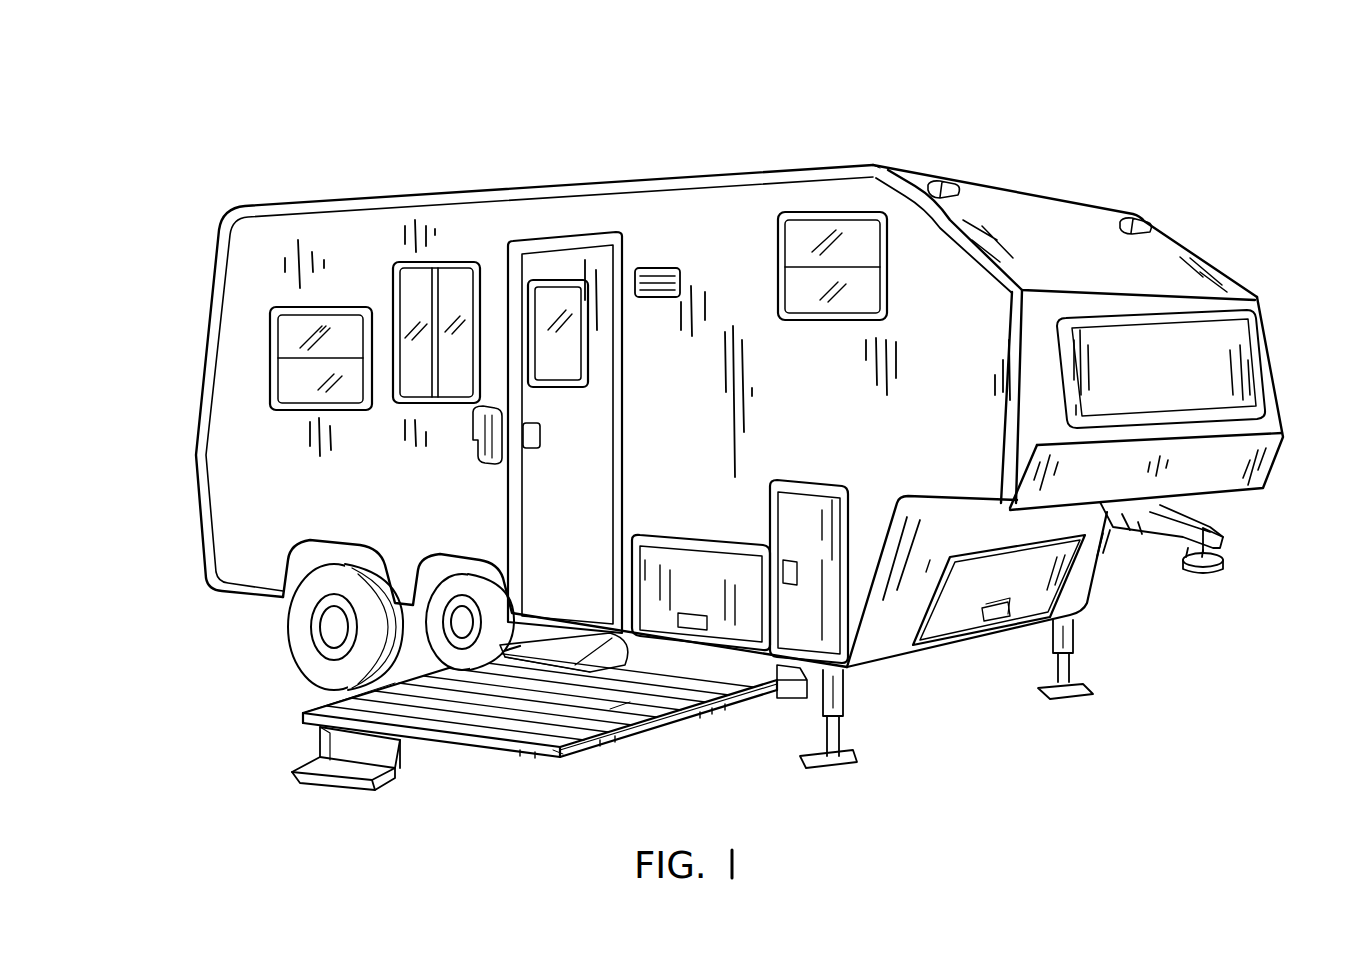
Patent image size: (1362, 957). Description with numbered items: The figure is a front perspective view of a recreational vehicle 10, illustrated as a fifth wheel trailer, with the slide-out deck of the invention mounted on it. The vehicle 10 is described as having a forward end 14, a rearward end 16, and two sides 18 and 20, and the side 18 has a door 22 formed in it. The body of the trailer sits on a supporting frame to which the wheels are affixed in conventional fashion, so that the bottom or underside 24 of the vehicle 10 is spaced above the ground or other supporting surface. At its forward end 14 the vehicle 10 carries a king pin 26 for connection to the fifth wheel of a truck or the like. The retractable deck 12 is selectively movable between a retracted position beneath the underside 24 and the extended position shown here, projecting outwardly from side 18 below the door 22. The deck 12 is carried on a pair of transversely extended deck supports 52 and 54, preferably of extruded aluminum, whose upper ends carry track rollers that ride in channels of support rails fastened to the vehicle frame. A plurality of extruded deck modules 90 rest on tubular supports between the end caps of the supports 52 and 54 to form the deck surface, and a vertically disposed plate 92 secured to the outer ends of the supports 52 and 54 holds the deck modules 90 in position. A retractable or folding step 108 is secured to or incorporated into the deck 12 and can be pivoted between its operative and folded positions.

The recreational vehicle 10 is at (847, 152).
The retractable deck 12 is at (492, 767).
The forward end 14 is at (1283, 378).
The rearward end 16 is at (197, 350).
The side 18 is at (817, 409).
The side 20 is at (1217, 255).
The door 22 is at (573, 513).
The underside 24 is at (253, 607).
The king pin 26 is at (1225, 557).
The deck support 52 is at (690, 717).
The deck support 54 is at (337, 697).
The deck modules 90 is at (607, 708).
The plate 92 is at (553, 758).
The folding step 108 is at (300, 795).